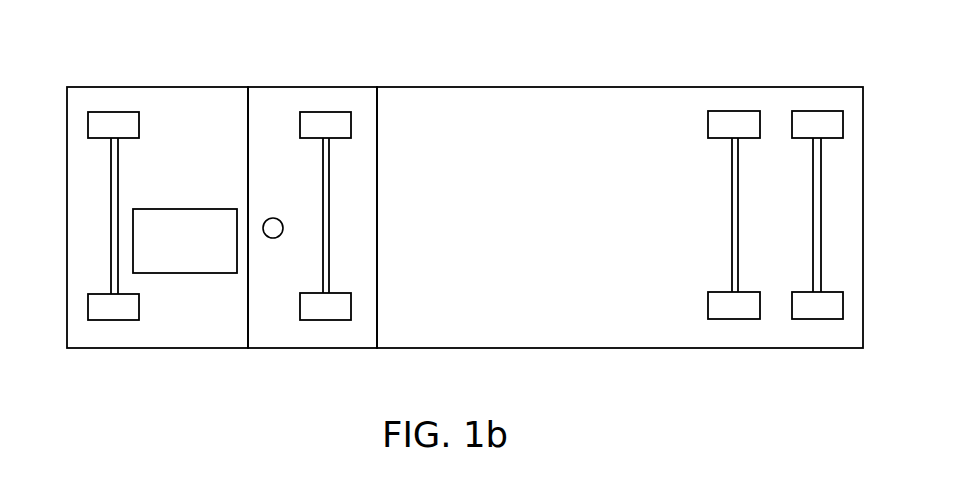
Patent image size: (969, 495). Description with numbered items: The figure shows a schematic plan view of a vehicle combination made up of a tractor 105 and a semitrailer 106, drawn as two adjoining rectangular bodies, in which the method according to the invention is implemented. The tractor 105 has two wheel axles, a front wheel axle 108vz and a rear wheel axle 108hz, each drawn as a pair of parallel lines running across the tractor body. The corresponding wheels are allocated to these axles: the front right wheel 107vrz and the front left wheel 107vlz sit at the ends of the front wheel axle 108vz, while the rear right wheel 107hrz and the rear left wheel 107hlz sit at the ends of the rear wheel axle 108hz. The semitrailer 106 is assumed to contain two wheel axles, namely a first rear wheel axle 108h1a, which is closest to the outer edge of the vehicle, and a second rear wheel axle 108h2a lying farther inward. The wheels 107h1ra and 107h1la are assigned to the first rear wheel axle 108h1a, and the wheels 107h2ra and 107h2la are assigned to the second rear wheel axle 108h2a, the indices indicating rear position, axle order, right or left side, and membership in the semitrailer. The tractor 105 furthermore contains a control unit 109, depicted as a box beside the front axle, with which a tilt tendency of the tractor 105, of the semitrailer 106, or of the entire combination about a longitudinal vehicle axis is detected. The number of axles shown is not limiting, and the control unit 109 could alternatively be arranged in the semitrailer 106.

The tractor 105 is at (188, 106).
The semitrailer 106 is at (502, 105).
The front right wheel of tractor 107vrz is at (113, 120).
The front left wheel of tractor 107vlz is at (111, 320).
The rear right wheel of tractor 107hrz is at (325, 120).
The rear left wheel of tractor 107hlz is at (322, 320).
The second rear right wheel of semitrailer 107h2ra is at (735, 120).
The second rear left wheel of semitrailer 107h2la is at (738, 312).
The first rear right wheel of semitrailer 107h1ra is at (807, 120).
The first rear left wheel of semitrailer 107h1la is at (808, 312).
The front wheel axle of tractor 108vz is at (120, 195).
The rear wheel axle of tractor 108hz is at (322, 221).
The second rear wheel axle of semitrailer 108h2a is at (729, 191).
The first rear wheel axle of semitrailer 108h1a is at (813, 188).
The control unit 109 is at (207, 273).